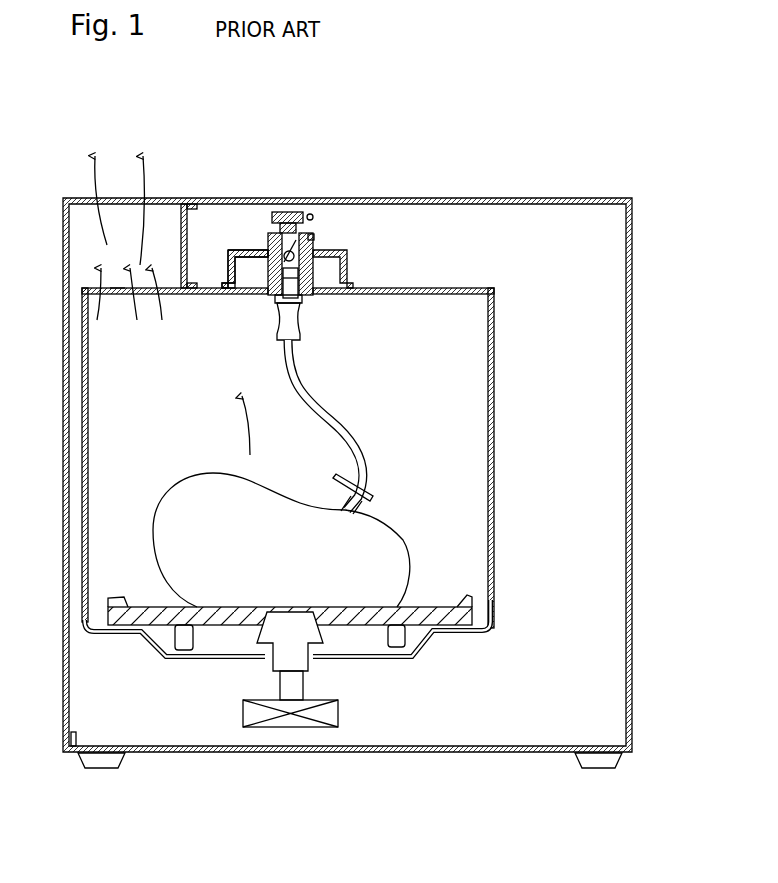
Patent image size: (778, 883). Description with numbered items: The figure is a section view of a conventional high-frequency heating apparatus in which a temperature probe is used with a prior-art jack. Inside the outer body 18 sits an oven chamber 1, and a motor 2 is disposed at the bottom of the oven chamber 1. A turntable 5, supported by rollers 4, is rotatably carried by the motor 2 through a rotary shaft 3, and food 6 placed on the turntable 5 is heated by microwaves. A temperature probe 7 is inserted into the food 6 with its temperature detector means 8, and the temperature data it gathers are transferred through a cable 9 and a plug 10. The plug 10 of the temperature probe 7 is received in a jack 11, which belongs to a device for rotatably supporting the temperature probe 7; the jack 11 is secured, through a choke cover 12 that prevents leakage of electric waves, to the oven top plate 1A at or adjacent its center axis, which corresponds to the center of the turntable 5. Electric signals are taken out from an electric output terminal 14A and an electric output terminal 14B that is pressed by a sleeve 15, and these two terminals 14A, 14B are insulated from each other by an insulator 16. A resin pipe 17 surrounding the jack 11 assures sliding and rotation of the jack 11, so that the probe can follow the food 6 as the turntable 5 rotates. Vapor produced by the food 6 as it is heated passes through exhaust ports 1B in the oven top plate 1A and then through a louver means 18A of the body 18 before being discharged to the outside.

The oven chamber 1 is at (495, 527).
The oven top plate 1A is at (313, 298).
The exhaust ports 1B is at (118, 292).
The motor 2 is at (283, 723).
The rotary shaft 3 is at (322, 642).
The rollers 4 is at (398, 640).
The turntable 5 is at (460, 612).
The food 6 is at (397, 550).
The temperature probe 7 is at (350, 416).
The temperature detector means 8 is at (348, 508).
The cable 9 is at (365, 463).
The plug 10 is at (297, 280).
The jack 11 is at (272, 208).
The choke cover 12 is at (352, 255).
The electric output terminal 14A is at (312, 214).
The electric output terminal 14B is at (314, 233).
The sleeve 15 is at (270, 290).
The insulator 16 is at (270, 240).
The resin pipe 17 is at (258, 250).
The body 18 is at (632, 275).
The louver means 18A is at (83, 198).